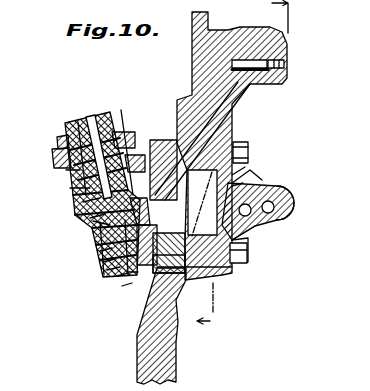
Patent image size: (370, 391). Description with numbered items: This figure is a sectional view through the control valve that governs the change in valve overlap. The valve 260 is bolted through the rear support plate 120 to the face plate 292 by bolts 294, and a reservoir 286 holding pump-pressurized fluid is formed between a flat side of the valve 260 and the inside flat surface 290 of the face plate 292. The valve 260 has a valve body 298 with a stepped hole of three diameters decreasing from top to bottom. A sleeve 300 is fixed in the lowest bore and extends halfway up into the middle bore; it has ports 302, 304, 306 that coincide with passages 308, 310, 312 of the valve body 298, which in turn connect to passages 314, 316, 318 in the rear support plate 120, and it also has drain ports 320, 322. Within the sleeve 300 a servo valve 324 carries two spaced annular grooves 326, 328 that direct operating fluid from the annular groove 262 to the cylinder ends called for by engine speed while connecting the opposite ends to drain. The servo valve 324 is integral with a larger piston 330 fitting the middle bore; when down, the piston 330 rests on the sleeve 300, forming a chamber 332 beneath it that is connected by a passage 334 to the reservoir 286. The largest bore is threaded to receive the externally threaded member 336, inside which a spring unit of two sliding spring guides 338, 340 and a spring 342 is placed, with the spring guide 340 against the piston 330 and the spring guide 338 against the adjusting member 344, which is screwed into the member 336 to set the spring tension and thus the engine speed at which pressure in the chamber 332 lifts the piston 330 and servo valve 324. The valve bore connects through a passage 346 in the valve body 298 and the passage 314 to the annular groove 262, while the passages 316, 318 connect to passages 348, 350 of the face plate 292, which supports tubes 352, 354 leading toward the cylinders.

The rear support plate 120 is at (177, 350).
The valve 260 is at (100, 106).
The annular groove 262 is at (283, 67).
The reservoir 286 is at (262, 230).
The inside flat surface 290 is at (242, 184).
The face plate 292 is at (282, 192).
The bolts 294 is at (247, 140).
The valve body 298 is at (70, 188).
The sleeve 300 is at (107, 270).
The port 302 is at (103, 262).
The port 304 is at (122, 286).
The port 306 is at (127, 272).
The passage 308 is at (168, 130).
The passage 310 is at (156, 266).
The passage 312 is at (157, 293).
The passage 314 is at (218, 103).
The passage 316 is at (245, 167).
The passage 318 is at (195, 280).
The drain port 320 is at (97, 238).
The drain port 322 is at (153, 278).
The servo valve 324 is at (90, 218).
The annular groove 326 is at (100, 251).
The annular groove 328 is at (117, 276).
The piston 330 is at (83, 202).
The chamber 332 is at (93, 221).
The passage 334 is at (248, 240).
The externally threaded member 336 is at (54, 157).
The spring guide 338 is at (88, 113).
The spring guide 340 is at (128, 132).
The spring 342 is at (66, 170).
The adjusting member 344 is at (60, 137).
The passage 346 is at (147, 140).
The passage 348 is at (243, 183).
The passage 350 is at (225, 277).
The tube 352 is at (282, 200).
The tube 354 is at (280, 212).